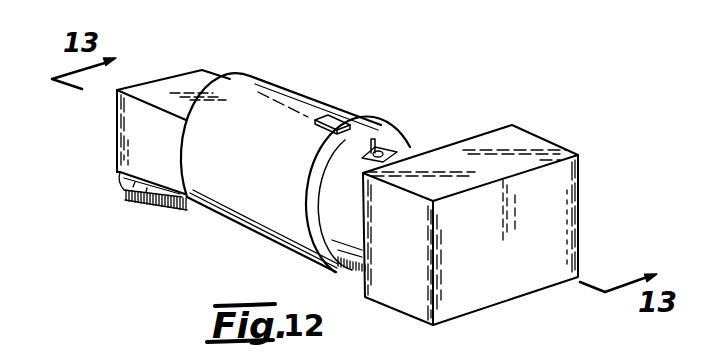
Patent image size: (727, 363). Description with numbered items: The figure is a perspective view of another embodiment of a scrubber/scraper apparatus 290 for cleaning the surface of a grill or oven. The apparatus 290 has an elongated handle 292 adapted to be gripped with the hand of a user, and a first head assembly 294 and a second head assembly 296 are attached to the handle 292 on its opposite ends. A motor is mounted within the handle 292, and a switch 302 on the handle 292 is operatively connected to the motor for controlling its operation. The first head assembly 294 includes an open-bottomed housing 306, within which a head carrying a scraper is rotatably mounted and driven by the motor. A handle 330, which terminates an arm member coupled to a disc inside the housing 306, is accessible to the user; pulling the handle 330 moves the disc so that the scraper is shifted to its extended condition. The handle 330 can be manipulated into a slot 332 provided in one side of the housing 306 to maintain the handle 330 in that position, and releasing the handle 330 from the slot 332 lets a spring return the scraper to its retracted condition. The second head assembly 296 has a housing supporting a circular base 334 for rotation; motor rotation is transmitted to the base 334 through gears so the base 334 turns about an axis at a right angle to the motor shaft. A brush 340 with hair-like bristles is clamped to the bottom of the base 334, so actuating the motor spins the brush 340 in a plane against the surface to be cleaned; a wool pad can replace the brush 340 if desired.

The scrubber/scraper apparatus 290 is at (540, 110).
The elongated handle 292 is at (238, 212).
The first head assembly 294 is at (555, 197).
The second head assembly 296 is at (132, 133).
The switch 302 is at (333, 115).
The open-bottomed housing 306 is at (565, 236).
The handle 330 is at (360, 170).
The slot 332 is at (360, 157).
The circular base 334 is at (122, 173).
The brush 340 is at (138, 205).